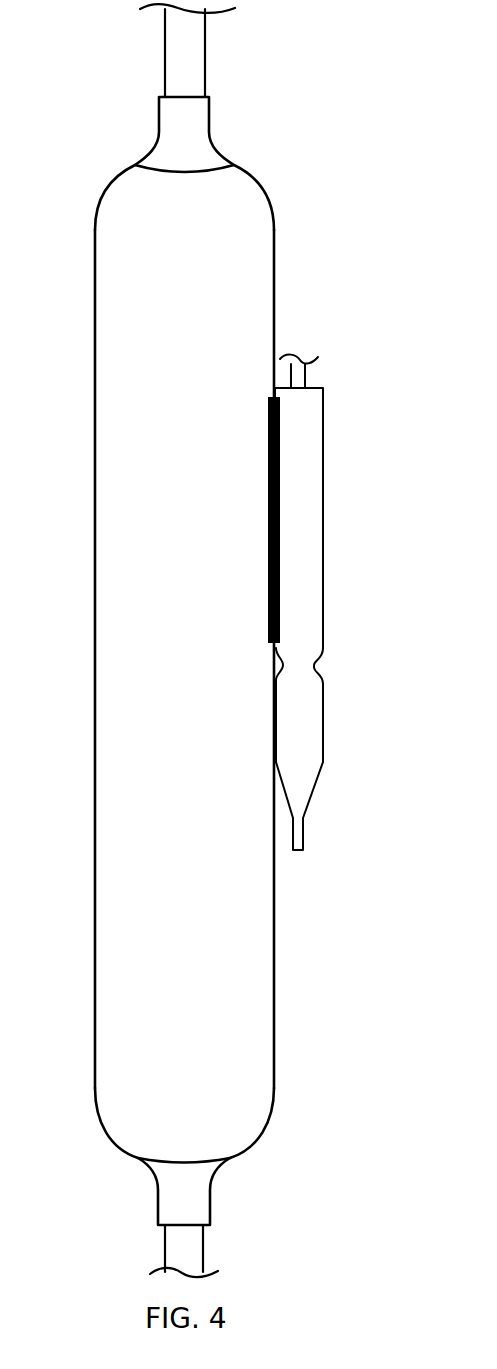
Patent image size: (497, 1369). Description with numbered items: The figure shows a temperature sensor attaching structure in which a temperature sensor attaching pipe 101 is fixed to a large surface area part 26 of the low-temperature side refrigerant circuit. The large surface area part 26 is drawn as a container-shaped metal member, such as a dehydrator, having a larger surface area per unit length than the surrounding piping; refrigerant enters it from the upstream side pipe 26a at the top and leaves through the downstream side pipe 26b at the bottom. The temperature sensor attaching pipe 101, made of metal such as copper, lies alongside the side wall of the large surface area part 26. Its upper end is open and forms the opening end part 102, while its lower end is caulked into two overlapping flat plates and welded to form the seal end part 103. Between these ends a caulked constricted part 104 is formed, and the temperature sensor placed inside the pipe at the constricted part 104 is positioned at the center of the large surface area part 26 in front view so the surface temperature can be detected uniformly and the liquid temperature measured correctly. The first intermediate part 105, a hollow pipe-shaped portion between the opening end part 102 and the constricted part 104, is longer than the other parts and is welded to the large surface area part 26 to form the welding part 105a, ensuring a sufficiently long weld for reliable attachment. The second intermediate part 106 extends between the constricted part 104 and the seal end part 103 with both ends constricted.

The large surface area part 26 is at (94, 589).
The upstream side pipe 26a is at (205, 74).
The downstream side pipe 26b is at (203, 1237).
The temperature sensor attaching pipe 101 is at (349, 537).
The opening end part 102 is at (313, 386).
The seal end part 103 is at (303, 838).
The constricted part 104 is at (315, 667).
The first intermediate part 105 is at (323, 488).
The welding part 105a is at (268, 423).
The second intermediate part 106 is at (323, 735).